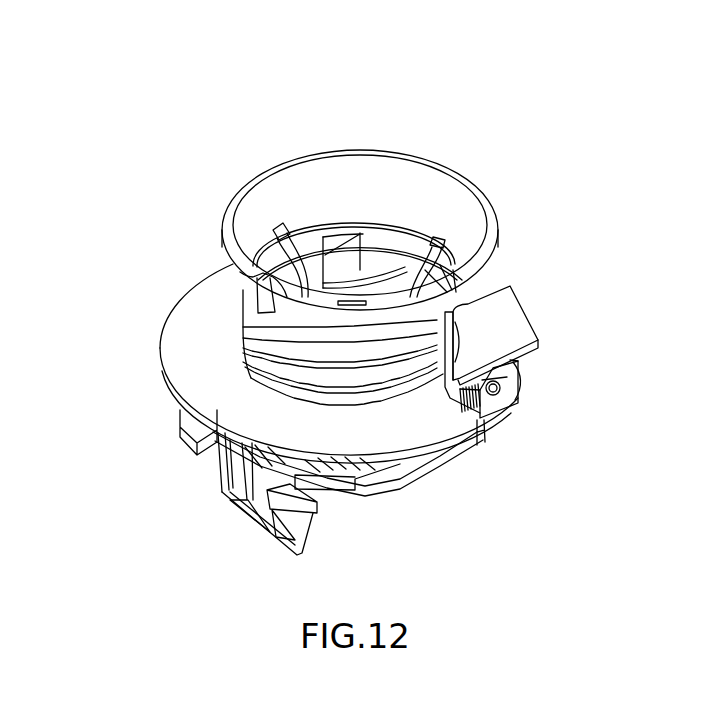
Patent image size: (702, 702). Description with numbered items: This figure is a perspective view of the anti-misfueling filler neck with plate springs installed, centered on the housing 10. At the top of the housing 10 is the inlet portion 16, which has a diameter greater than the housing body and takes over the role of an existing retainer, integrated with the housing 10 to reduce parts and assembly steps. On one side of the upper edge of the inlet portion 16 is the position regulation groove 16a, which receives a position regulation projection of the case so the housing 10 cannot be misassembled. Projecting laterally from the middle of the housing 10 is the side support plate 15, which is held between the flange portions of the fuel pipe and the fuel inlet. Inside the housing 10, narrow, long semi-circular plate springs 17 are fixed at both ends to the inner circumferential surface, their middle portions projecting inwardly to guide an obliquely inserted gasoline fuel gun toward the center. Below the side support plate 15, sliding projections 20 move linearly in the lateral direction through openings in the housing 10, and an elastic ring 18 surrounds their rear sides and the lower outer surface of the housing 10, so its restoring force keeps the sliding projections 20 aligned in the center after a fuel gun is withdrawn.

The housing 10 is at (376, 150).
The side support plate 15 is at (164, 340).
The inlet portion 16 is at (472, 172).
The position regulation groove 16a is at (270, 291).
The plate spring 17 is at (301, 274).
The elastic ring 18 is at (440, 462).
The sliding projection 20 is at (219, 493).